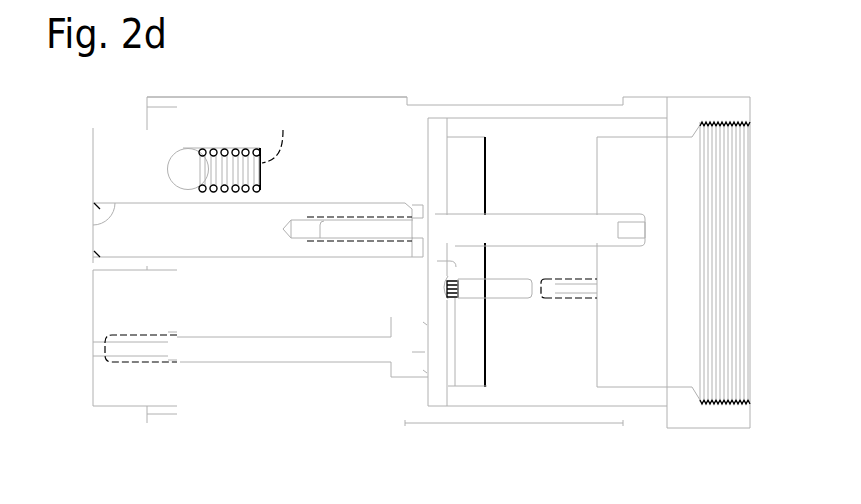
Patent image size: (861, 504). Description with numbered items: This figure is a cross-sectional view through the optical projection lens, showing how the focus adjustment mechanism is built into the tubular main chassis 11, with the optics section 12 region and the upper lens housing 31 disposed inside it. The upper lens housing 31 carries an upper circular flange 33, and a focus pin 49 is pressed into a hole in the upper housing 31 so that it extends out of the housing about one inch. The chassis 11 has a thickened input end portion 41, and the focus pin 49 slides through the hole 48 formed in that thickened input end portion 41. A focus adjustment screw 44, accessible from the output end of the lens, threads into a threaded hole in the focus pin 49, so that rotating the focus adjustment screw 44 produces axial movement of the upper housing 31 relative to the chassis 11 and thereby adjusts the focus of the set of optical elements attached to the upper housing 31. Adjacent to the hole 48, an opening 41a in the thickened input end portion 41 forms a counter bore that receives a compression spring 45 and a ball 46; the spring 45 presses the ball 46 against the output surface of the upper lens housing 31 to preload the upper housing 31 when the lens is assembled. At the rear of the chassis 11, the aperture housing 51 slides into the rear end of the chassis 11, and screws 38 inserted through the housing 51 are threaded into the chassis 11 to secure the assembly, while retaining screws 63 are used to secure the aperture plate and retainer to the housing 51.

The main chassis 11 is at (368, 96).
The optics section 12 is at (492, 103).
The upper lens housing 31 is at (91, 407).
The upper circular flange 33 is at (105, 148).
The screws 38 is at (262, 363).
The thickened input end portion 41 is at (185, 119).
The opening 41a is at (283, 130).
The focus adjustment screw 44 is at (537, 228).
The spring 45 is at (224, 150).
The ball 46 is at (190, 167).
The hole 48 is at (100, 223).
The focus pin 49 is at (291, 200).
The aperture housing 51 is at (708, 96).
The retaining screws 63 is at (445, 283).